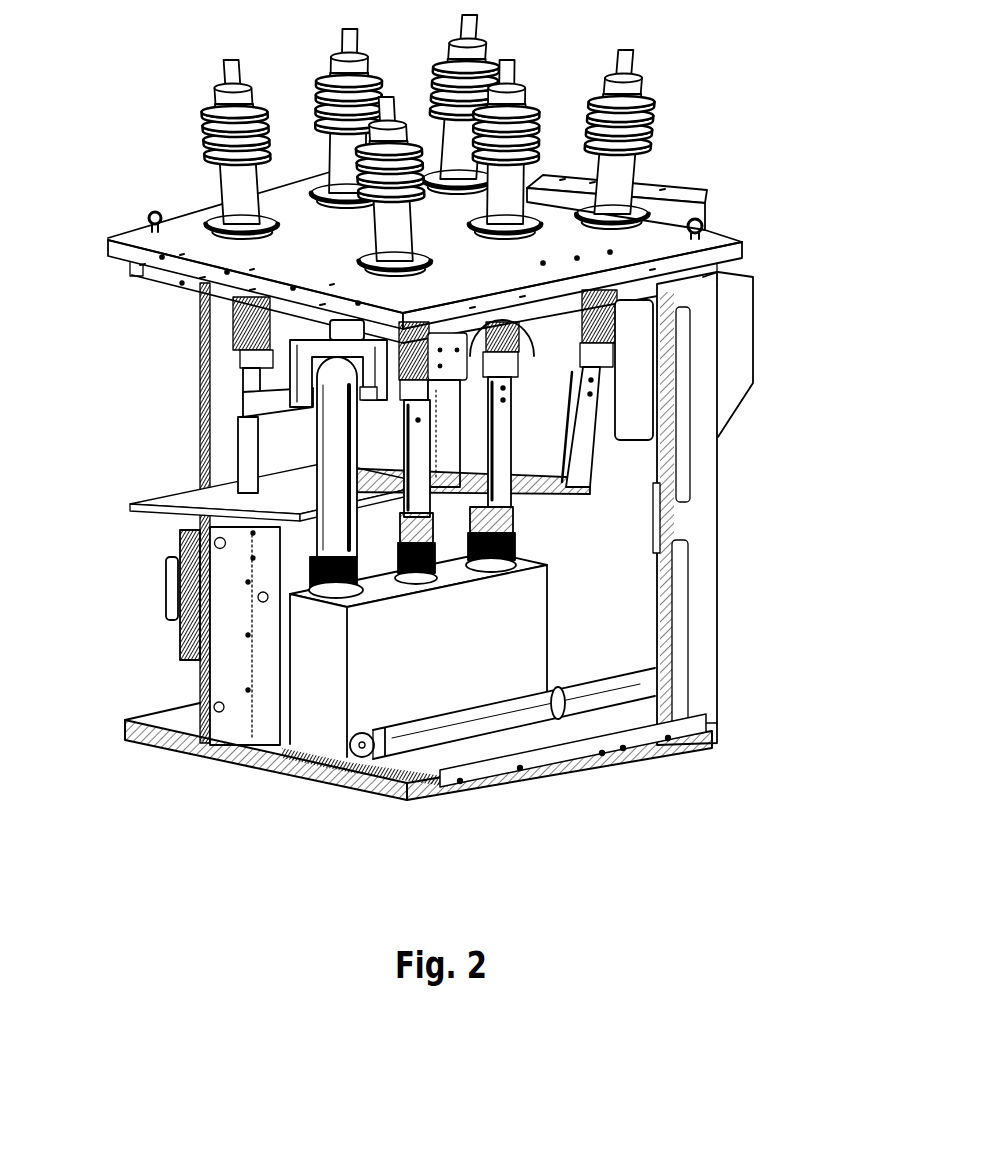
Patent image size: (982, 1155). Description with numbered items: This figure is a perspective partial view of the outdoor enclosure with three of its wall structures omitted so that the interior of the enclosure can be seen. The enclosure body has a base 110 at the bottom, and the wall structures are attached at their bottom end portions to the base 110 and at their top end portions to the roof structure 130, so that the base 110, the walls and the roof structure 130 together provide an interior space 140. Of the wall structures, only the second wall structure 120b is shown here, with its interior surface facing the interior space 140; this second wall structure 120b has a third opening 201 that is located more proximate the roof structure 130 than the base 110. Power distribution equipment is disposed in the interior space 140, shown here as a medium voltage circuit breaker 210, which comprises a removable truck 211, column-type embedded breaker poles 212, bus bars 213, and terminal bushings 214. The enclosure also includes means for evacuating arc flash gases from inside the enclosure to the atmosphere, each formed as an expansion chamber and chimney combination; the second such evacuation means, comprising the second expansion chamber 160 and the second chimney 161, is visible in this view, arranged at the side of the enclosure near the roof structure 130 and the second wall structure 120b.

The base 110 is at (143, 733).
The second wall structure 120b is at (590, 572).
The roof structure 130 is at (115, 186).
The interior space 140 is at (148, 395).
The second expansion chamber 160 is at (776, 345).
The second chimney 161 is at (741, 212).
The third opening 201 is at (623, 388).
The medium voltage circuit breaker 210 is at (517, 620).
The removable truck 211 is at (385, 663).
The column-type embedded breaker poles 212 is at (303, 387).
The bus bars 213 is at (173, 537).
The terminal bushings 214 is at (613, 297).